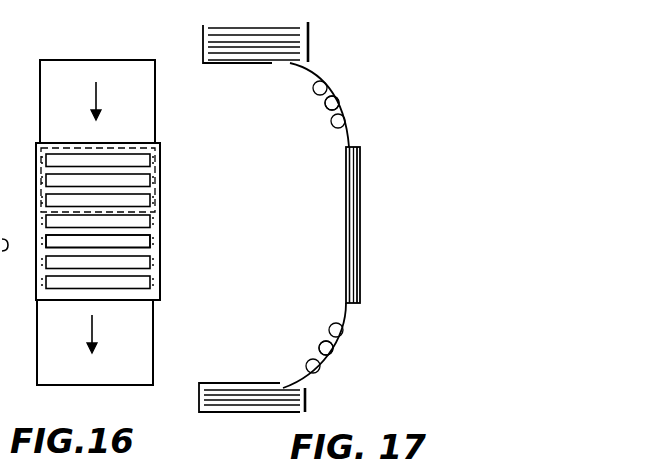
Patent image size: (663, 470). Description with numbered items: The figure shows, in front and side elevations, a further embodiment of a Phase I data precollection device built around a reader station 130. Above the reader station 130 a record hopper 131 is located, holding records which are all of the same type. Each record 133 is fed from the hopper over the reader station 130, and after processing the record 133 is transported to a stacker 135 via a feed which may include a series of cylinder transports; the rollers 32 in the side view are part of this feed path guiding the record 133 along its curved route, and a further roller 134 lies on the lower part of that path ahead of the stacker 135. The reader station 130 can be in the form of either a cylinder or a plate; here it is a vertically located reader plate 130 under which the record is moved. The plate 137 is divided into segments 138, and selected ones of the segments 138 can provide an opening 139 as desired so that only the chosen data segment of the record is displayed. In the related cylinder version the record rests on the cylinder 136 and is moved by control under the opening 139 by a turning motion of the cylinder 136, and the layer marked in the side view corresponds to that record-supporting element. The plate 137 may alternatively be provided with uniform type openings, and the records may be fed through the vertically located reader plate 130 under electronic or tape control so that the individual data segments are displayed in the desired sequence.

In FIG. 17, the roller 32 is at (318, 104).
In FIG. 16, the reader station 130 is at (160, 160).
In FIG. 17, the reader station 130 is at (360, 234).
In FIG. 17, the record hopper 131 is at (298, 40).
In FIG. 17, the record 133 is at (318, 74).
In FIG. 17, the guide roller 134 is at (318, 345).
In FIG. 17, the stacker 135 is at (306, 398).
In FIG. 17, the cylinder 136 is at (348, 206).
In FIG. 16, the plate 137 is at (152, 293).
In FIG. 17, the plate 137 is at (360, 186).
In FIG. 16, the segments 138 is at (160, 205).
In FIG. 16, the opening 139 is at (146, 240).